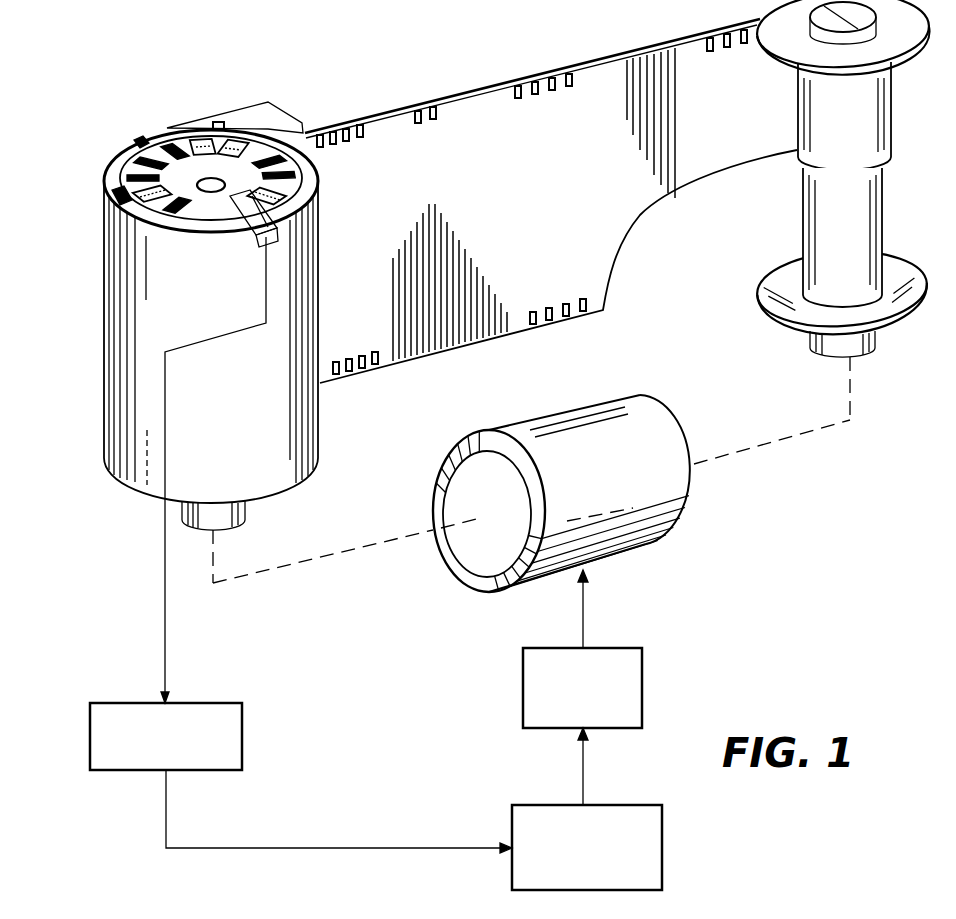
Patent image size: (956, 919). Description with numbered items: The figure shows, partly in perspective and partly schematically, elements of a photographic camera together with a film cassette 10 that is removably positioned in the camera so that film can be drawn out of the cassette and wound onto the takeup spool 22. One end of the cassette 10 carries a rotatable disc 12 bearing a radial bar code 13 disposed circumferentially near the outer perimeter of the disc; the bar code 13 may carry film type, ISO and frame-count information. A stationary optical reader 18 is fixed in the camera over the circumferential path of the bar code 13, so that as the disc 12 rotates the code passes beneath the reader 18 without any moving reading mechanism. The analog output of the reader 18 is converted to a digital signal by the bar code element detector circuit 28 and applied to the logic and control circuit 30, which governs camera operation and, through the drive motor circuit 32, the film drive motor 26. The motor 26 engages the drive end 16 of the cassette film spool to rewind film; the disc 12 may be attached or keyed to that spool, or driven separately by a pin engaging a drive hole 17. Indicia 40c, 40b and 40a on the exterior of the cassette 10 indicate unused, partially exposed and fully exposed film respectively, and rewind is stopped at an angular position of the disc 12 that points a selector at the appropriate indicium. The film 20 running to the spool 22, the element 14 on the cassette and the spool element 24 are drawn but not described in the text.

The film cassette 10 is at (140, 466).
The rotatable disc 12 is at (186, 199).
The radial bar code 13 is at (240, 140).
The arm 14 is at (280, 112).
The drive end 16 is at (246, 513).
The drive hole 17 is at (205, 180).
The stationary optical reader 18 is at (258, 237).
The filmstrip 20 is at (455, 93).
The takeup spool 22 is at (815, 215).
The spool shaft 24 is at (835, 350).
The film drive motor 26 is at (645, 526).
The bar code element detector circuit 28 is at (232, 755).
The logic and control circuit 30 is at (650, 838).
The drive motor circuit 32 is at (630, 690).
The indicium (E) 40a is at (217, 122).
The indicium (P) 40b is at (138, 140).
The indicium (U) 40c is at (114, 188).